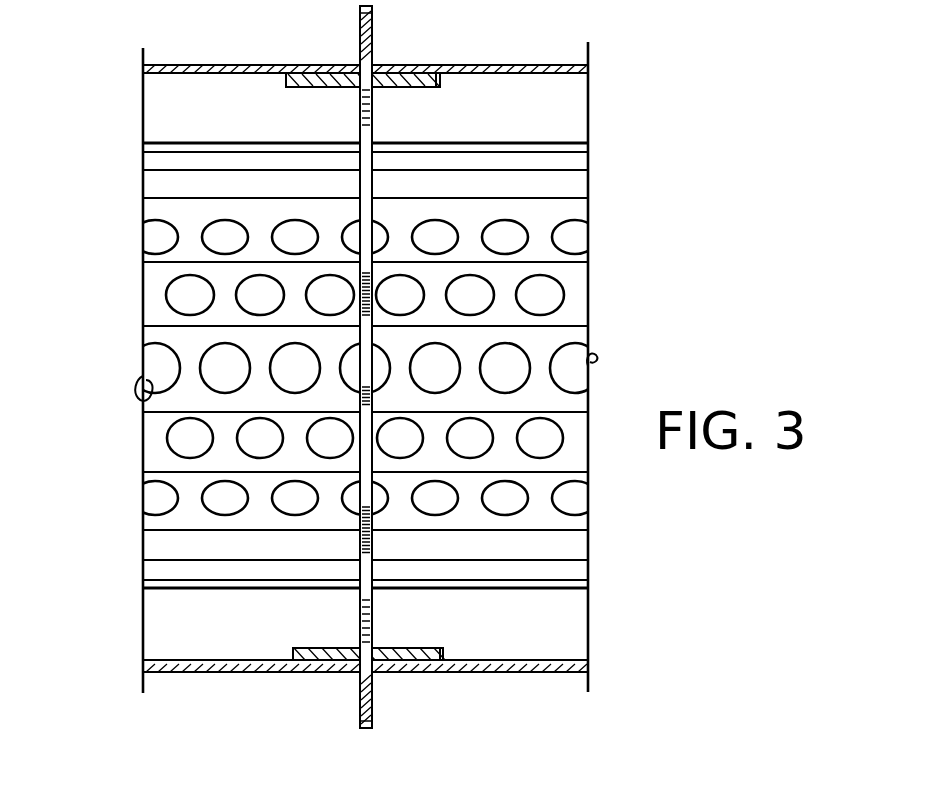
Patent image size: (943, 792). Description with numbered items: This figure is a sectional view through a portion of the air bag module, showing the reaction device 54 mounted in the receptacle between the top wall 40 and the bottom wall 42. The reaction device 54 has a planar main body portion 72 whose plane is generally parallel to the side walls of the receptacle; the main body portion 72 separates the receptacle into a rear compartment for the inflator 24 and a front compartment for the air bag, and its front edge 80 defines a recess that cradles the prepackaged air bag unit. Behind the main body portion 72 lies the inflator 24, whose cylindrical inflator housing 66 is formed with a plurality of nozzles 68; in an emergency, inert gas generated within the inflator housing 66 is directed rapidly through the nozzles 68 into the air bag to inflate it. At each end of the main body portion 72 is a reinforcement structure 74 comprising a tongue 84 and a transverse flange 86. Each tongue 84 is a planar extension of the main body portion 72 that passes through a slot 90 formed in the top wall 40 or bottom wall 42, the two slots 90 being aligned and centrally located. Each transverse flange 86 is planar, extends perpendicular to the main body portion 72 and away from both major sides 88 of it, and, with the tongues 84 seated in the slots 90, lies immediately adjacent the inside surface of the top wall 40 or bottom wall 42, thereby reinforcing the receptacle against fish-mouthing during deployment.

The inflator 24 is at (190, 338).
The top wall 40 is at (500, 66).
The bottom wall 42 is at (505, 674).
The reaction device 54 is at (390, 608).
The inflator housing 66 is at (557, 187).
The nozzles 68 is at (582, 388).
The main body portion 72 is at (390, 520).
The reinforcement structure 74 is at (296, 95).
The front edge 80 is at (358, 550).
The tongue 84 is at (373, 42).
The transverse flange 86 is at (440, 88).
The major sides 88 is at (358, 110).
The slot 90 is at (361, 72).